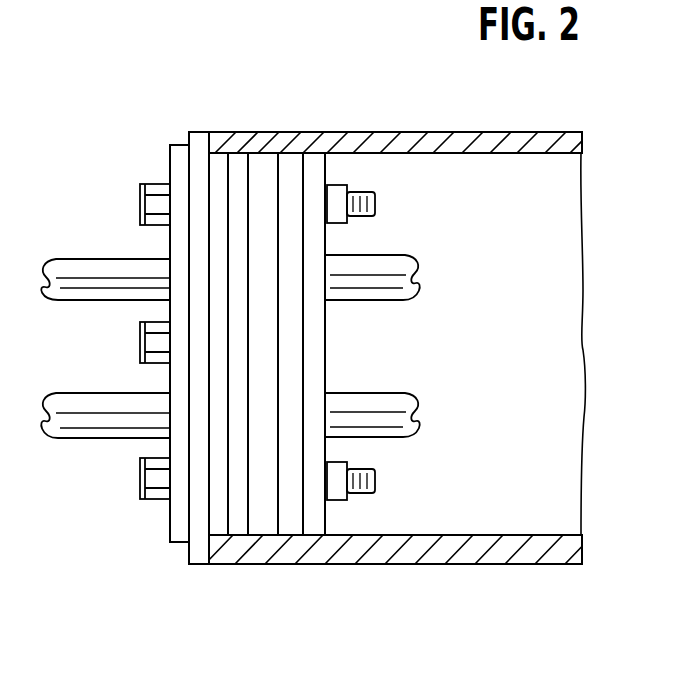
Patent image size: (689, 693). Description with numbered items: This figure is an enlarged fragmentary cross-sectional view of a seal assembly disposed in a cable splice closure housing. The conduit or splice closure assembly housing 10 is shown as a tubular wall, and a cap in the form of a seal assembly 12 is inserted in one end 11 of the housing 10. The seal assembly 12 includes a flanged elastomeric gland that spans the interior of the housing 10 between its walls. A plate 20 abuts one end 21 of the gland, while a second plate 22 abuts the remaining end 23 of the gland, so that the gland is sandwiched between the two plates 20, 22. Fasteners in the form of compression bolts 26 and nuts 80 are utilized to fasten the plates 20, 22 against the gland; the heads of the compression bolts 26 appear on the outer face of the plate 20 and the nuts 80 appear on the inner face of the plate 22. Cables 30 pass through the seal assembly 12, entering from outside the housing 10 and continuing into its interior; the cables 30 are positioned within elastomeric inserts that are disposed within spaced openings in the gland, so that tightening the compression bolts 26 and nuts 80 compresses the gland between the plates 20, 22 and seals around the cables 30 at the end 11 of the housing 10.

The housing 10 is at (483, 132).
The end of housing 11 is at (213, 540).
The seal assembly 12 is at (265, 167).
The plate 20 is at (170, 158).
The end of gland 21 is at (188, 137).
The plate 22 is at (322, 240).
The end of gland 23 is at (310, 152).
The compression bolts 26 is at (141, 207).
The cables 30 is at (84, 290).
The nuts 80 is at (347, 188).